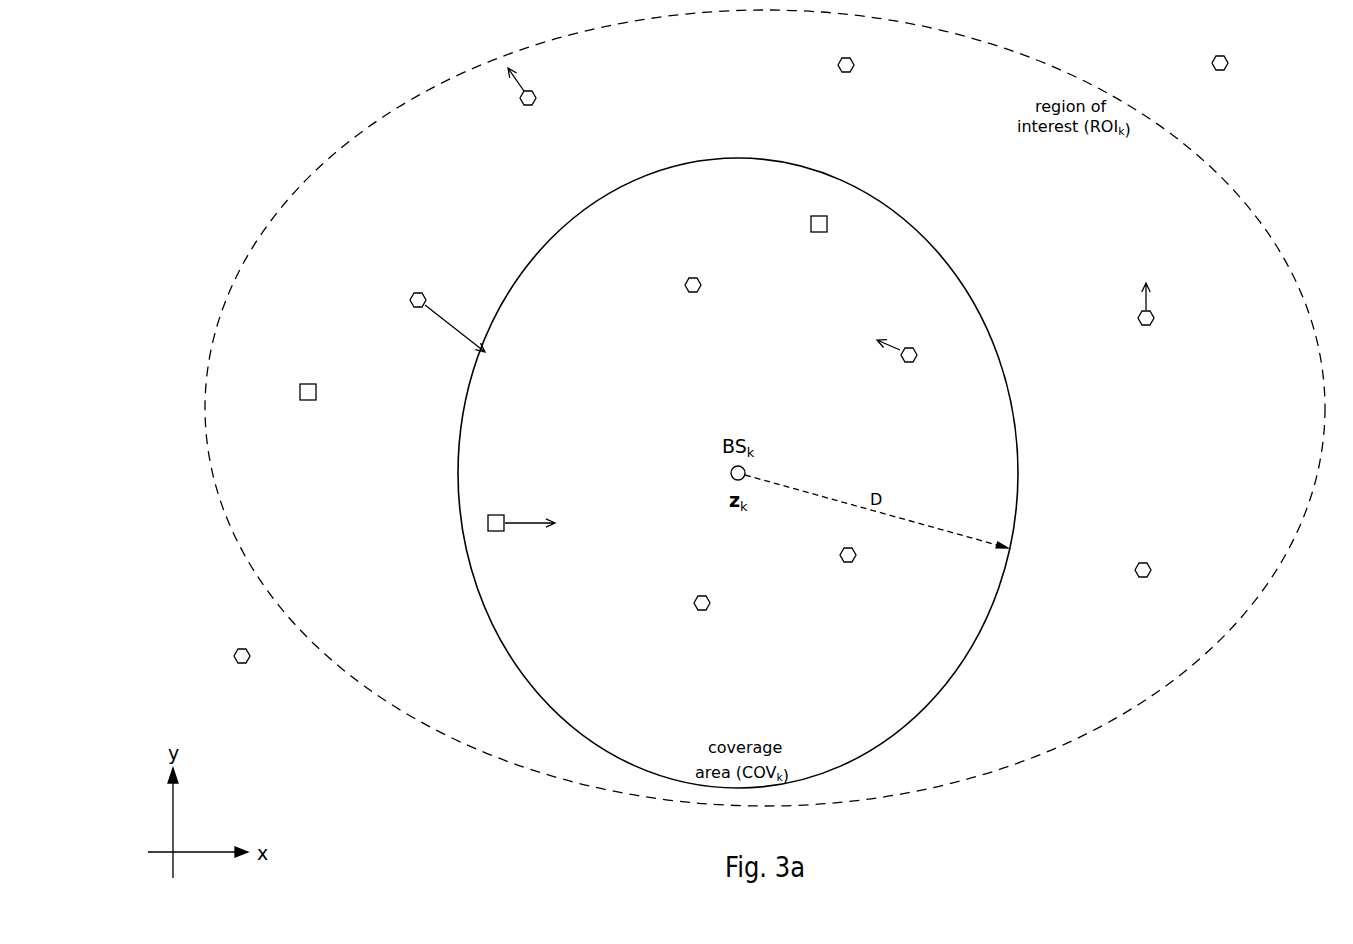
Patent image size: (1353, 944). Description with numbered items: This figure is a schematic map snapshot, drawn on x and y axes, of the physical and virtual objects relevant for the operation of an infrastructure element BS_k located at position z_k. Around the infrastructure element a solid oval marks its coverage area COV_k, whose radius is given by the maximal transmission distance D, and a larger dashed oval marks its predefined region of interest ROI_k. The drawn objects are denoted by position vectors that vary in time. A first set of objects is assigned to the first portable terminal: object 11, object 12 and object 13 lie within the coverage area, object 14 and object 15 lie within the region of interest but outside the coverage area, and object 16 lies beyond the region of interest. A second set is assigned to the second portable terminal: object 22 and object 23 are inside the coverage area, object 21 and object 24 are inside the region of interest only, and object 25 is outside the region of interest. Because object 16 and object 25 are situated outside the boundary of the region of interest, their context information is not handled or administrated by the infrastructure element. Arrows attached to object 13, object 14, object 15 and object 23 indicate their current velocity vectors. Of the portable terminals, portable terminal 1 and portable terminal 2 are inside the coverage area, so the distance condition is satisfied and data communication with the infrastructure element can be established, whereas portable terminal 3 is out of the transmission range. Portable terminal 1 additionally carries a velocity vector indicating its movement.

The object OBJ11 11 is at (704, 621).
The object OBJ12 12 is at (697, 302).
The object OBJ13 13 is at (457, 318).
The object OBJ14 14 is at (530, 88).
The object OBJ15 15 is at (1150, 309).
The object OBJ16 16 is at (1224, 81).
The object OBJ21 21 is at (847, 82).
The object OBJ22 22 is at (852, 574).
The object OBJ23 23 is at (896, 358).
The object OBJ24 24 is at (1146, 590).
The object OBJ25 25 is at (247, 674).
The portable terminal UE1 1 is at (544, 524).
The portable terminal UE2 2 is at (823, 243).
The portable terminal UE3 3 is at (310, 410).